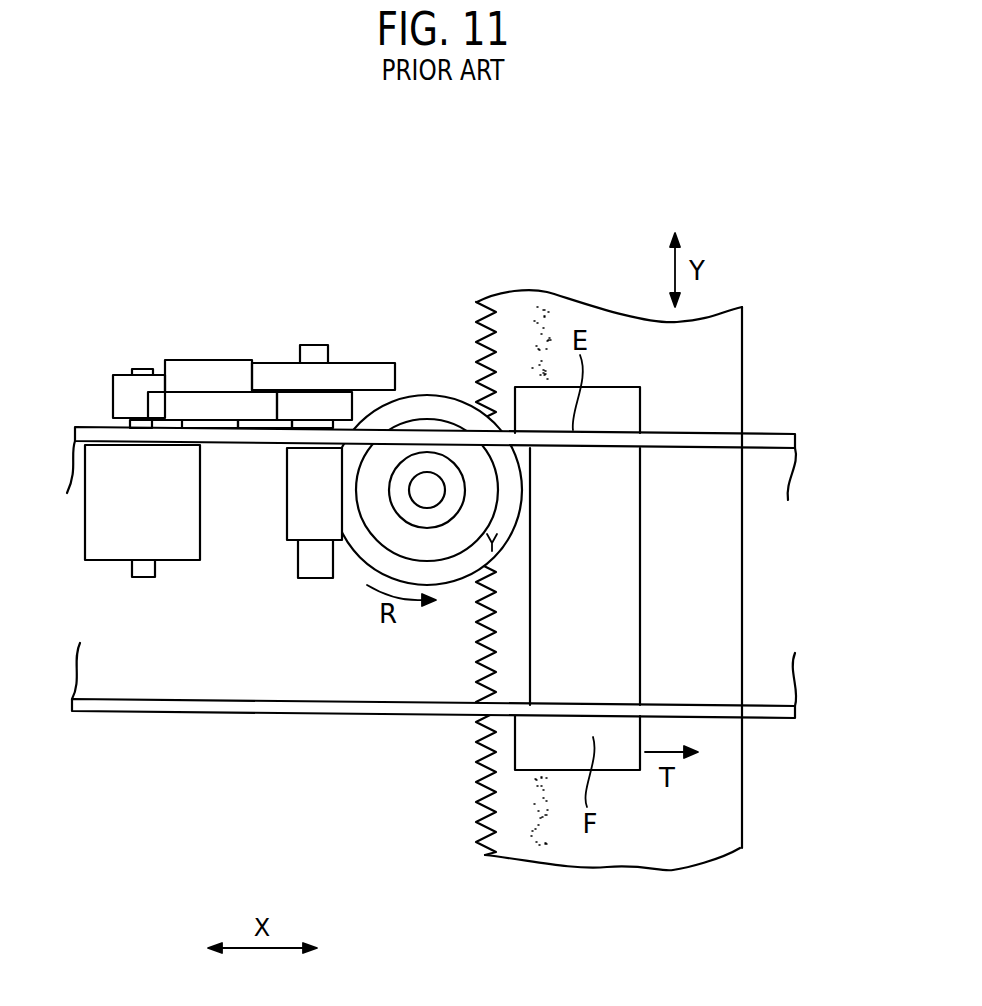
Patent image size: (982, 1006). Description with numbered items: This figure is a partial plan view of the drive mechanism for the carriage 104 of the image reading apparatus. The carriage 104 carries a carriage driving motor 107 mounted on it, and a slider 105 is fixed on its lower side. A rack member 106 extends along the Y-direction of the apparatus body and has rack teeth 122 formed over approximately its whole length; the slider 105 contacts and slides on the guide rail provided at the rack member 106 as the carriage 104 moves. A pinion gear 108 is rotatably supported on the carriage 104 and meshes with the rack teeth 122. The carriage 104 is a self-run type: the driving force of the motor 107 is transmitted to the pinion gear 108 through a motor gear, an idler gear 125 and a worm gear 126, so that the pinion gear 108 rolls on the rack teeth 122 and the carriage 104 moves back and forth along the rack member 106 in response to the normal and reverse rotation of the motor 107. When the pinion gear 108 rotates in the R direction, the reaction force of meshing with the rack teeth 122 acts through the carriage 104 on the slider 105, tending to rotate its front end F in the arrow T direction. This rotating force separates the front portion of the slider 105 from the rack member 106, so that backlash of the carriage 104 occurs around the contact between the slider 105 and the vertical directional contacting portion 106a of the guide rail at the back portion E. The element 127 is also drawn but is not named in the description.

The carriage 104 is at (203, 708).
The slider 105 is at (617, 563).
The rack member 106 is at (513, 820).
The vertical directional contacting portion 106a is at (545, 338).
The carriage driving motor 107 is at (123, 545).
The pinion gear 108 is at (425, 398).
The rack teeth 122 is at (482, 650).
The idler gear 125 is at (197, 408).
The worm gear 126 is at (292, 400).
The bearing 127 is at (297, 540).